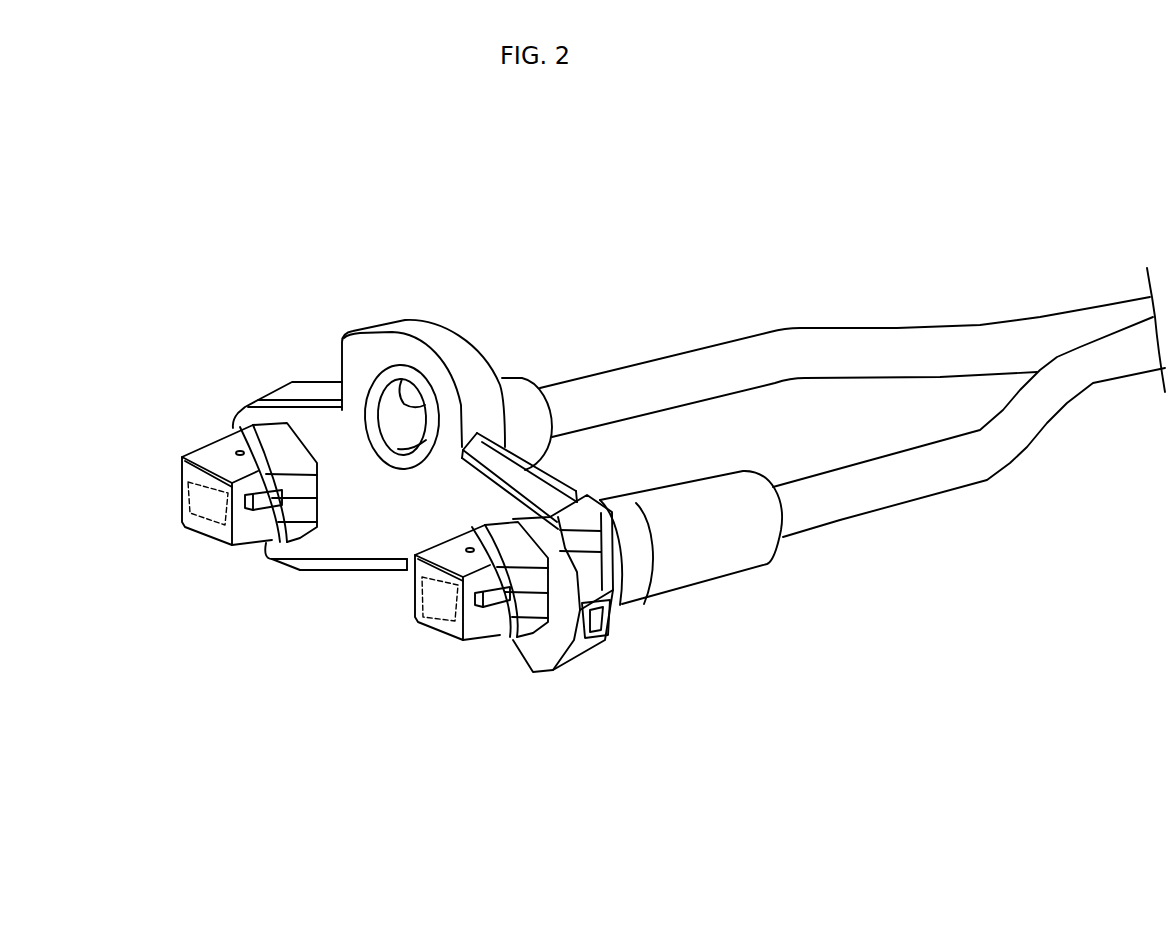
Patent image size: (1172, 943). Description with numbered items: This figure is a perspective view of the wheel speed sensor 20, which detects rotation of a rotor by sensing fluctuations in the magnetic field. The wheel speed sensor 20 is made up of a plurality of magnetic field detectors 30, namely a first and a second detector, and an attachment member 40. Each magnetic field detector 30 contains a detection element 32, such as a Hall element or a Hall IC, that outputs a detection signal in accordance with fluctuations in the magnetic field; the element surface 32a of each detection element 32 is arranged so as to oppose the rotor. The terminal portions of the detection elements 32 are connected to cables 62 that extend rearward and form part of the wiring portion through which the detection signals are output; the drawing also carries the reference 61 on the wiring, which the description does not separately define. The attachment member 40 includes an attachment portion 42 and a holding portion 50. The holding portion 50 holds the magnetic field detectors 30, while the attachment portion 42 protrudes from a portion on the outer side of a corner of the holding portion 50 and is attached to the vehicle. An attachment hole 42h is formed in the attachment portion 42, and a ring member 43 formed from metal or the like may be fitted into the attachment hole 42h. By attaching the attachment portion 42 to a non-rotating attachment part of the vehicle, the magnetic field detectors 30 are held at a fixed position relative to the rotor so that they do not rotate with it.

The wheel speed sensor 20 is at (617, 200).
The magnetic field detector 30 is at (203, 447).
The detection element 32 is at (207, 530).
The element surface 32a is at (200, 502).
The attachment member 40 is at (545, 477).
The attachment portion 42 is at (451, 325).
The attachment hole 42h is at (417, 410).
The ring member 43 is at (392, 467).
The holding portion 50 is at (610, 653).
The electric wire 61 is at (992, 332).
The cable 62 is at (853, 328).